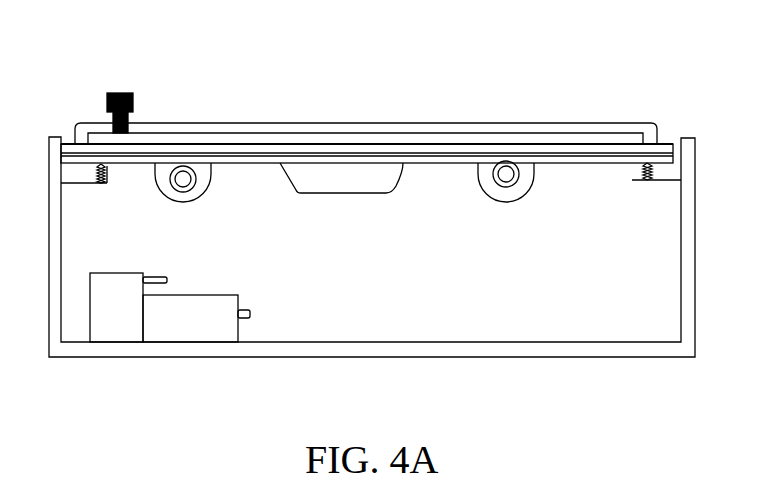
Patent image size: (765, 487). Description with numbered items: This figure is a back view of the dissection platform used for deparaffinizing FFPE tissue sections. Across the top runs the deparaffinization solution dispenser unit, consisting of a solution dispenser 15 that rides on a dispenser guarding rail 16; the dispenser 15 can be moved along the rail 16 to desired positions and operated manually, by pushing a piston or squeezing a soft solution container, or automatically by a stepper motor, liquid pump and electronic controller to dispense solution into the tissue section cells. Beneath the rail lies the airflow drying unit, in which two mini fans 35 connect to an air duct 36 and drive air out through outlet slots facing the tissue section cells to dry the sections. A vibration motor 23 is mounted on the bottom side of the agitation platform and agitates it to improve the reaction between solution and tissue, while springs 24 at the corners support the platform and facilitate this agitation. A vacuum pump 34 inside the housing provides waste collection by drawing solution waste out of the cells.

The solution dispenser 15 is at (138, 98).
The dispenser guarding rail 16 is at (166, 137).
The air duct 36 is at (490, 118).
The springs 24 is at (118, 179).
The vibration motor 23 is at (350, 187).
The vacuum pump 34 is at (119, 327).
The mini fans 35 is at (518, 191).